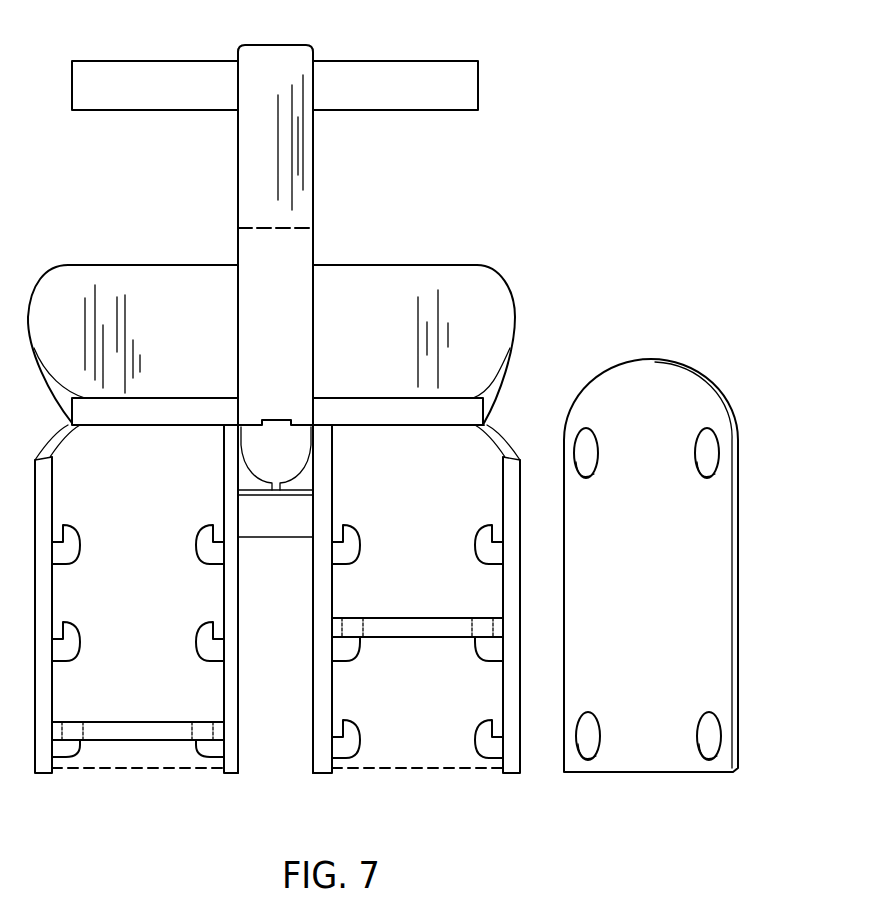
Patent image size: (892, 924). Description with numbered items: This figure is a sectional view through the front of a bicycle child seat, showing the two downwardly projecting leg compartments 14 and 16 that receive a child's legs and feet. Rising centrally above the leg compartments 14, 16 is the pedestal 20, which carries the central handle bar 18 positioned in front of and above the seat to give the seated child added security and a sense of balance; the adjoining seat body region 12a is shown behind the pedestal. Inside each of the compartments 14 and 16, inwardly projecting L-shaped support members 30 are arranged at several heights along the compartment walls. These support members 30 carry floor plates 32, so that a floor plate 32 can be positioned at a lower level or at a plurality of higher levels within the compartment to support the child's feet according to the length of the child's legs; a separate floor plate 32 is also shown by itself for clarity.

The handle bar 18 is at (472, 80).
The pedestal 20 is at (272, 44).
The body 12a is at (373, 340).
The leg compartment 14 is at (141, 572).
The leg compartment 16 is at (426, 572).
The L-shaped support member 30 is at (80, 537).
The floor plate 32 is at (654, 600).